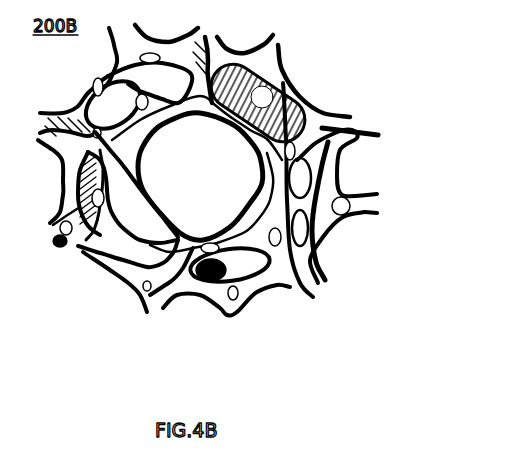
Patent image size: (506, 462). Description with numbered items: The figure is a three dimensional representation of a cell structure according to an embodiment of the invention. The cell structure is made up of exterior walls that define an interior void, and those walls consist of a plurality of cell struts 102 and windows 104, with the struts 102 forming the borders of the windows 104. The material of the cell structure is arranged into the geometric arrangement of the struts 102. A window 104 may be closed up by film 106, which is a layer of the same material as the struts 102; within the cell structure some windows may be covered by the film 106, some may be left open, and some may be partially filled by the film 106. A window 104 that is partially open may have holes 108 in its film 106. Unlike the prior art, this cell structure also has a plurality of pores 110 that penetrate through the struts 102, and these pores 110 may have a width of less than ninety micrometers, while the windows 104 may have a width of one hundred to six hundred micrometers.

The cell strut 102 is at (282, 267).
The window 104 is at (193, 188).
The film 106 is at (243, 88).
The hole 108 is at (267, 99).
The pore 110 is at (78, 248).